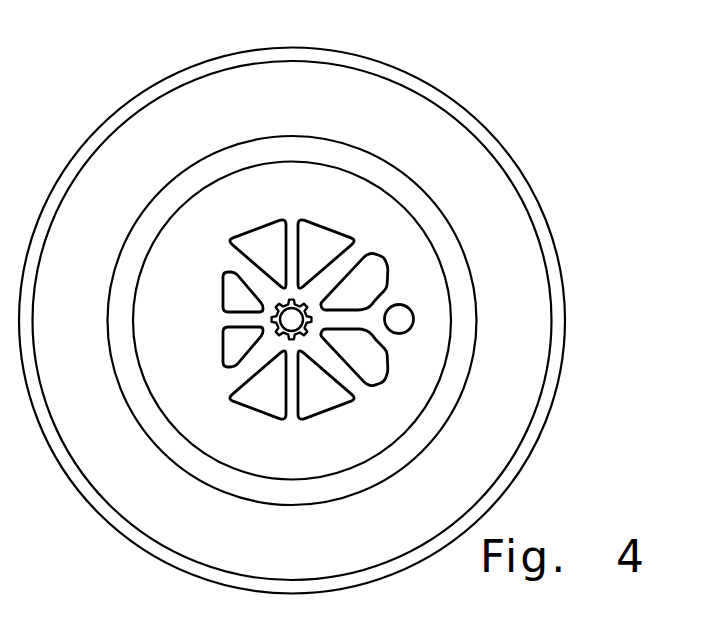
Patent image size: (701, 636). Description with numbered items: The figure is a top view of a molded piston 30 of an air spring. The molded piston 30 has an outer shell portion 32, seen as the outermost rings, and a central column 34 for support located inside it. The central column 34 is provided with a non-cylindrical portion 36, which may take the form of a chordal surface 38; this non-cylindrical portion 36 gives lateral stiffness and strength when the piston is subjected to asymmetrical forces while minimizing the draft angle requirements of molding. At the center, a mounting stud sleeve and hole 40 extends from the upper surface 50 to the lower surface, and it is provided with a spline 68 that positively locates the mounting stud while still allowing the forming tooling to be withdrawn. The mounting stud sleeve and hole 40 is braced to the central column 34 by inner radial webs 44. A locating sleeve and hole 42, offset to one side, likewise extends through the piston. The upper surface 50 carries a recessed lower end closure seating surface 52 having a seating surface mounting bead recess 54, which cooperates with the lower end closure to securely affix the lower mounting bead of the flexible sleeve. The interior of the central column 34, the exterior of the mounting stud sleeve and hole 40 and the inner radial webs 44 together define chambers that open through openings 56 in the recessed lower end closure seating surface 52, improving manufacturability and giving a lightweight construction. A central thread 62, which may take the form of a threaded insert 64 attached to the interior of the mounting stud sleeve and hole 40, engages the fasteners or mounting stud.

The molded piston 30 is at (528, 182).
The outer shell portion 32 is at (557, 243).
The central column 34 is at (335, 415).
The non-cylindrical portion 36 is at (226, 296).
The chordal surface 38 is at (226, 344).
The mounting stud sleeve and hole 40 is at (285, 338).
The locating sleeve and hole 42 is at (411, 327).
The inner radial webs 44 is at (347, 263).
The upper surface 50 is at (337, 200).
The recessed lower end closure seating surface 52 is at (250, 190).
The seating surface mounting bead recess 54 is at (466, 313).
The openings 56 is at (257, 247).
The central thread 62 is at (312, 309).
The threaded insert 64 is at (309, 329).
The spline 68 is at (292, 300).